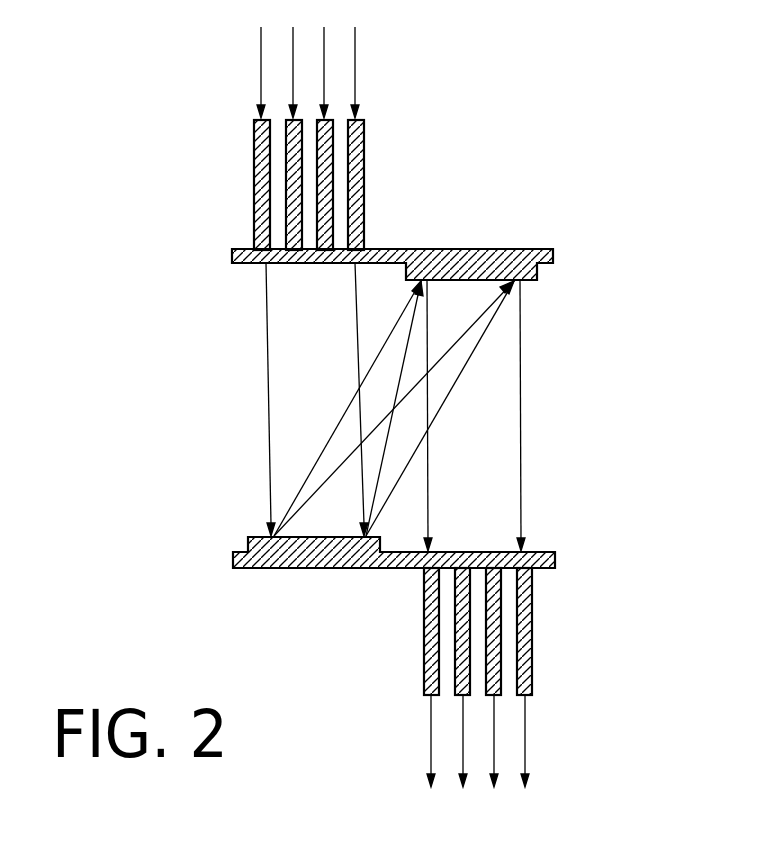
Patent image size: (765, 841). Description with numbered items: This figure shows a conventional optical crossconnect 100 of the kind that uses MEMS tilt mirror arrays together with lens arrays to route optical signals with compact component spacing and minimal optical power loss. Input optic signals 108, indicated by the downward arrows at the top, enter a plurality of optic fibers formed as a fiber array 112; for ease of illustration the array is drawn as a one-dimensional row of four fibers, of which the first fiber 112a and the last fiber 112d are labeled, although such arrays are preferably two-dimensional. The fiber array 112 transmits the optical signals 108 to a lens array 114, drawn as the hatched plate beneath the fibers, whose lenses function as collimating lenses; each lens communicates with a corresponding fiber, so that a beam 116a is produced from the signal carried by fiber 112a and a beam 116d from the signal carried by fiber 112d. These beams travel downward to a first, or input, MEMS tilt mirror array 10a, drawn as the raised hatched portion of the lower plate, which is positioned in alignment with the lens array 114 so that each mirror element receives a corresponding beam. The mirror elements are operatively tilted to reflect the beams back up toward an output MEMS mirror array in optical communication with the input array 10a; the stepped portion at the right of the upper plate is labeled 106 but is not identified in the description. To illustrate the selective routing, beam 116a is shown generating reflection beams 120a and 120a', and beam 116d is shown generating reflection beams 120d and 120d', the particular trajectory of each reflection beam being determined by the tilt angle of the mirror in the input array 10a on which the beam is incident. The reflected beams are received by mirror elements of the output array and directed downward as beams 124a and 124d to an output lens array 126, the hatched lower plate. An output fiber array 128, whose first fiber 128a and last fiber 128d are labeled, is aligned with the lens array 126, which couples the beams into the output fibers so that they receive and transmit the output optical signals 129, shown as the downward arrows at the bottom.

The optical crossconnect 100 is at (227, 423).
The input optic signals 108 is at (367, 63).
The fiber array 112 is at (375, 142).
The optic fiber 112a is at (255, 192).
The optic fiber 112d is at (365, 175).
The lens array 114 is at (232, 258).
The first optical element 106 is at (545, 268).
The beam 116a is at (266, 340).
The beam 116d is at (356, 292).
The reflection beam 120a is at (347, 408).
The reflection beam 120a' is at (336, 408).
The reflection beam 120d is at (440, 408).
The reflection beam 120d' is at (522, 408).
The beam 124a is at (428, 503).
The beam 124d is at (523, 492).
The first MEMS tilt mirror array 10a is at (248, 545).
The output lens array 126 is at (555, 560).
The output fiber array 128 is at (412, 678).
The output fiber 128a is at (423, 618).
The output fiber 128d is at (533, 628).
The output optical signals 129 is at (525, 738).